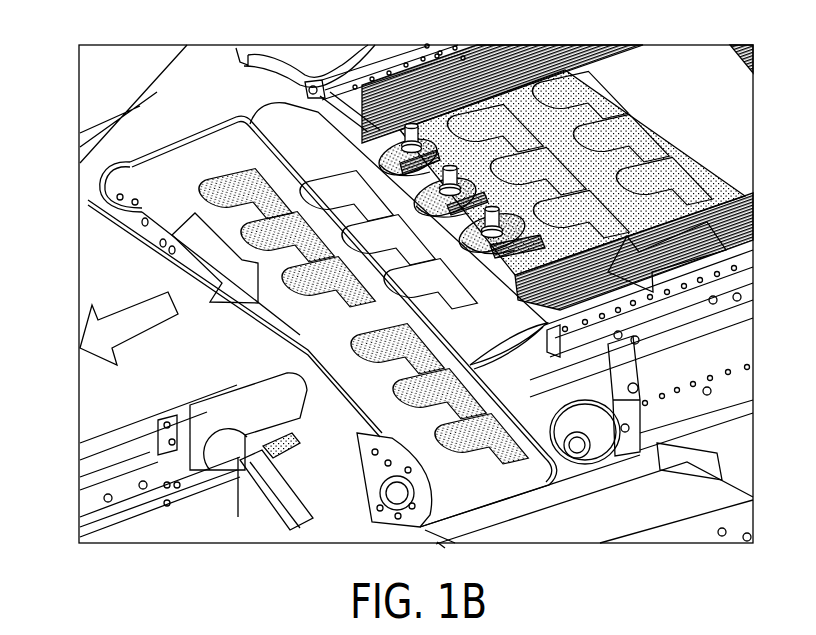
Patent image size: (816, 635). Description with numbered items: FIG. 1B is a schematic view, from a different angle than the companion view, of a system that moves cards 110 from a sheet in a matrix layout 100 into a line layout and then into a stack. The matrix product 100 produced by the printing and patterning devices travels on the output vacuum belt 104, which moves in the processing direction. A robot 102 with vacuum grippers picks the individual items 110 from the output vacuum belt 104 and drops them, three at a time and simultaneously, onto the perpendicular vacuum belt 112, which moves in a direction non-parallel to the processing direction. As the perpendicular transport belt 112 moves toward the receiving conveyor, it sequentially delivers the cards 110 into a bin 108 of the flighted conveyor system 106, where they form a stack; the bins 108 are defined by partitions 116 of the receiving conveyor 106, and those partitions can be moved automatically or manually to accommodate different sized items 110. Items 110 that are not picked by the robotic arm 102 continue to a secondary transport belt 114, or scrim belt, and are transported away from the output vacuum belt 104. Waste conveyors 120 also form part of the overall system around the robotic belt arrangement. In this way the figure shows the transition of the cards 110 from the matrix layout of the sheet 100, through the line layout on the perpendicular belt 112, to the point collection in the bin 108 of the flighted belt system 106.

The matrix product 100 is at (638, 140).
The robot 102 is at (444, 155).
The output vacuum belt 104 is at (566, 67).
The flighted conveyor system 106 is at (681, 487).
The bins 108 is at (641, 470).
The cards 110 is at (295, 301).
The perpendicular vacuum belt 112 is at (178, 163).
The secondary transport belt 114 is at (115, 390).
The partitions 116 is at (440, 544).
The waste conveyors 120 is at (338, 200).